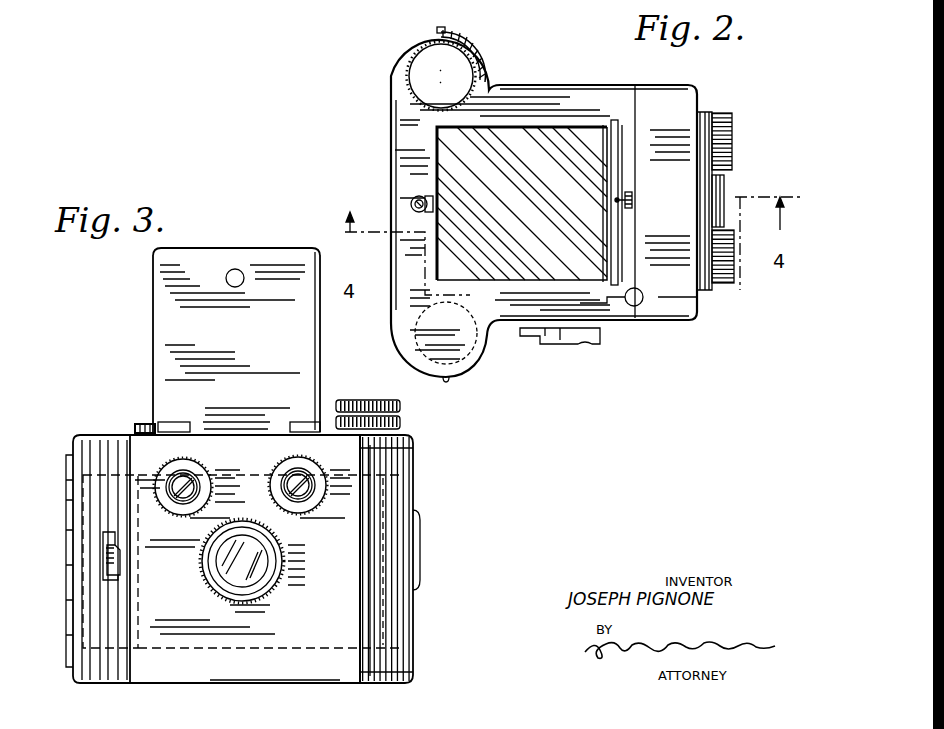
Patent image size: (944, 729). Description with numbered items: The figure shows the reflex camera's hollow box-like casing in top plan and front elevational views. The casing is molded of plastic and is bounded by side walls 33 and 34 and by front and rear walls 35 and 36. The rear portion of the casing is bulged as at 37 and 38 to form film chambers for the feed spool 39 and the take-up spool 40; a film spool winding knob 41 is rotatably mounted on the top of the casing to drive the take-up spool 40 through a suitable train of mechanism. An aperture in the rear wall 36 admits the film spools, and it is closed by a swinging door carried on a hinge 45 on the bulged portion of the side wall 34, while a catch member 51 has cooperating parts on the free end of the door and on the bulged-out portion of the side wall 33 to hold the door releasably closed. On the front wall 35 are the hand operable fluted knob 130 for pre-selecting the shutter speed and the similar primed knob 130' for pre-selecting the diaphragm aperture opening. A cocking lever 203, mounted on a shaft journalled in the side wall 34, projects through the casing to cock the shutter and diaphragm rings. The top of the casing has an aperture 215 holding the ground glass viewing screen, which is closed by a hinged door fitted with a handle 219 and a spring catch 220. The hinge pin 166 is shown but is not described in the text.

In FIG. 2, the side wall 33 is at (566, 98).
In FIG. 3, the side wall 33 is at (414, 668).
In FIG. 2, the side wall 34 is at (624, 317).
In FIG. 3, the side wall 34 is at (88, 678).
In FIG. 2, the front wall 35 is at (690, 108).
In FIG. 3, the front wall 35 is at (338, 617).
In FIG. 2, the rear wall 36 is at (395, 178).
In FIG. 2, the bulged portion 37 is at (465, 43).
In FIG. 2, the bulged portion 38 is at (465, 366).
In FIG. 3, the feed spool 39 is at (85, 618).
In FIG. 3, the take-up spool 40 is at (395, 553).
In FIG. 2, the film spool winding knob 41 is at (425, 76).
In FIG. 3, the film spool winding knob 41 is at (402, 408).
In FIG. 3, the hinge 45 is at (72, 508).
In FIG. 2, the catch member 51 is at (441, 27).
In FIG. 3, the catch member 51 is at (418, 522).
In FIG. 3, the fluted knob 130 is at (186, 477).
In FIG. 3, the fluted knob 130' is at (311, 477).
In FIG. 2, the hinge pin 166 is at (642, 296).
In FIG. 3, the hinge pin 166 is at (146, 422).
In FIG. 3, the cocking lever 203 is at (105, 558).
In FIG. 2, the aperture 215 is at (445, 148).
In FIG. 2, the handle 219 is at (633, 200).
In FIG. 3, the handle 219 is at (237, 270).
In FIG. 2, the spring catch 220 is at (411, 205).